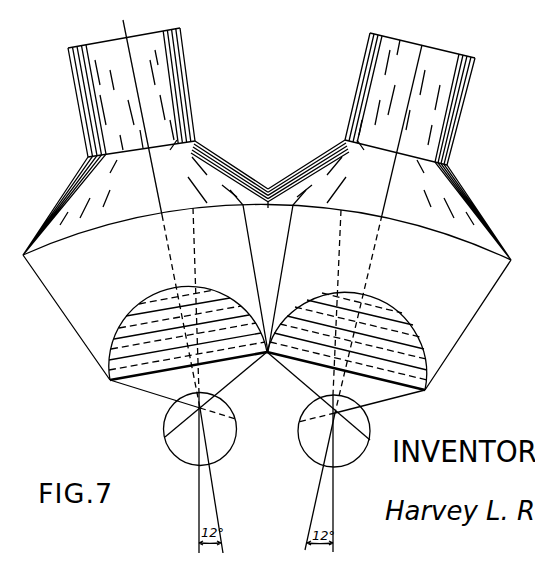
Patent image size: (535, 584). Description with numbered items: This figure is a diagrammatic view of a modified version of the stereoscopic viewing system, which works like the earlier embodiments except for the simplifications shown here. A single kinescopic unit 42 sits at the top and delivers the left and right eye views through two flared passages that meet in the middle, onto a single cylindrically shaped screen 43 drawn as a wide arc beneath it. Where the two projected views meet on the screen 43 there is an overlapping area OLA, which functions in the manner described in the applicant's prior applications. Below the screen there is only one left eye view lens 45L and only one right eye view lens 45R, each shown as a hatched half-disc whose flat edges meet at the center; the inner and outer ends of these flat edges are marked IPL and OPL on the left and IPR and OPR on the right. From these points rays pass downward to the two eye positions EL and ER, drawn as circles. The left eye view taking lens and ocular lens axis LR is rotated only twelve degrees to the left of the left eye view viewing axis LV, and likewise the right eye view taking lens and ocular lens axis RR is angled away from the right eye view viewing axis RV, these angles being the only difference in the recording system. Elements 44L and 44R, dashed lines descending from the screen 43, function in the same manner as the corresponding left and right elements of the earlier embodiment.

The kinescopic unit 42 is at (293, 168).
The cylindrically shaped screen 43 is at (127, 223).
The left element 44L is at (185, 212).
The right element 44R is at (350, 214).
The overlapping area OLA is at (285, 207).
The left eye view lens 45L is at (132, 314).
The right eye view lens 45R is at (417, 327).
The inner point left IPL is at (261, 362).
The inner point right IPR is at (294, 372).
The outer point left OPL is at (153, 390).
The outer point right OPR is at (386, 399).
The left eye lens EL is at (164, 436).
The right eye lens ER is at (300, 436).
The left eye view viewing axis LV is at (197, 478).
The left eye view taking lens and ocular lens axis LR is at (211, 490).
The right eye view taking lens and ocular lens axis RR is at (320, 489).
The right eye view viewing axis RV is at (335, 480).